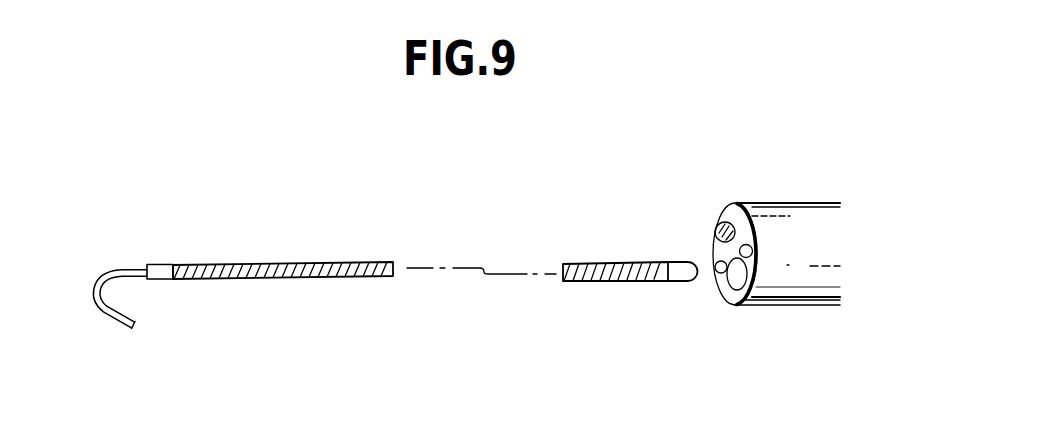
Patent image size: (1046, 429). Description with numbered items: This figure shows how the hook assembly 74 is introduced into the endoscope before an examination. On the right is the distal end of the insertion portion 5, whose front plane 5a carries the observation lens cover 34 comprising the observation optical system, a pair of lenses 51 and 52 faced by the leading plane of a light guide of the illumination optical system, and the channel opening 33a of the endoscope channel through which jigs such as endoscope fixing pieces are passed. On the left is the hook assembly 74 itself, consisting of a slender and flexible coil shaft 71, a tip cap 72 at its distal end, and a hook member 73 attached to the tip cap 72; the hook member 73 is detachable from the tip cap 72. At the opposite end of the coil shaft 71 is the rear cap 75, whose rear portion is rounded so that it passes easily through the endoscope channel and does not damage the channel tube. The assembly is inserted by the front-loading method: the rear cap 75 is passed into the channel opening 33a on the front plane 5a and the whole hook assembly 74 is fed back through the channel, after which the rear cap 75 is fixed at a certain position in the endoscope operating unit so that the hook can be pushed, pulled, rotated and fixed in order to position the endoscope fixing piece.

The insertion portion 5 is at (816, 225).
The front plane 5a is at (741, 224).
The observation lens cover 34 is at (718, 224).
The lens 51 is at (716, 264).
The lens 52 is at (752, 252).
The channel opening 33a is at (735, 288).
The coil shaft 71 is at (333, 263).
The tip cap 72 is at (160, 279).
The hook member 73 is at (117, 328).
The hook assembly 74 is at (236, 238).
The rear cap 75 is at (678, 282).